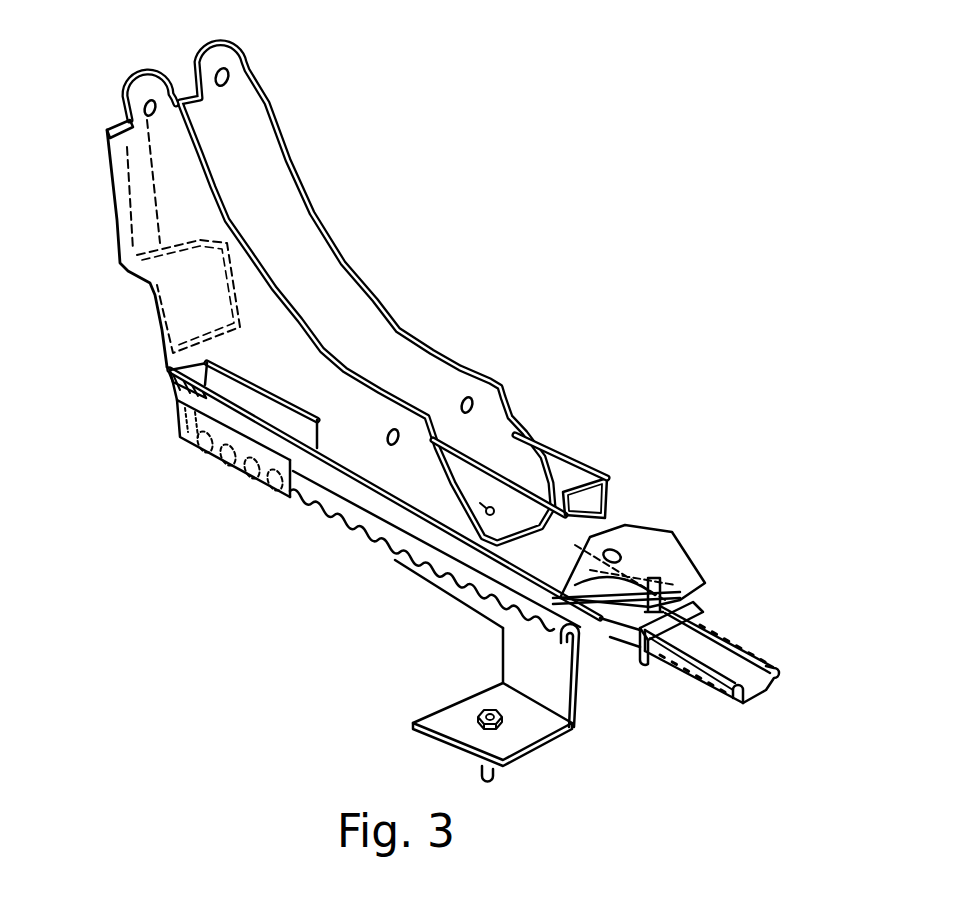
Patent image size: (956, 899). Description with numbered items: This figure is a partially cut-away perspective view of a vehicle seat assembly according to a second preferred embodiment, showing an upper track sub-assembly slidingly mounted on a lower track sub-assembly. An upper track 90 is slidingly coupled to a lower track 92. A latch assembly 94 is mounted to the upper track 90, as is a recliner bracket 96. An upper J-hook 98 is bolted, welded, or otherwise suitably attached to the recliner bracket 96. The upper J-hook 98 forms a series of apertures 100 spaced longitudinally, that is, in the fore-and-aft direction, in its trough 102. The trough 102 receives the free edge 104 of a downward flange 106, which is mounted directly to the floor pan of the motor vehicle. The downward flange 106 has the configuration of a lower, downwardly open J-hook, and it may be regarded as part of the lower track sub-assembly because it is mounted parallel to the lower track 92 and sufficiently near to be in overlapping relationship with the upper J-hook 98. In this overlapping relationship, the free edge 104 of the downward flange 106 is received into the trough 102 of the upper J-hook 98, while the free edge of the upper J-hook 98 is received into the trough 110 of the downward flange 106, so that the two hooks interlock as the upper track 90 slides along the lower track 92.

The upper track 90 is at (630, 652).
The lower track 92 is at (750, 647).
The latch assembly 94 is at (633, 532).
The recliner bracket 96 is at (314, 190).
The upper J-hook 98 is at (173, 372).
The apertures 100 is at (232, 473).
The trough 102 is at (289, 492).
The free edge 104 is at (465, 602).
The downward flange 106 is at (557, 653).
The trough 110 is at (576, 660).